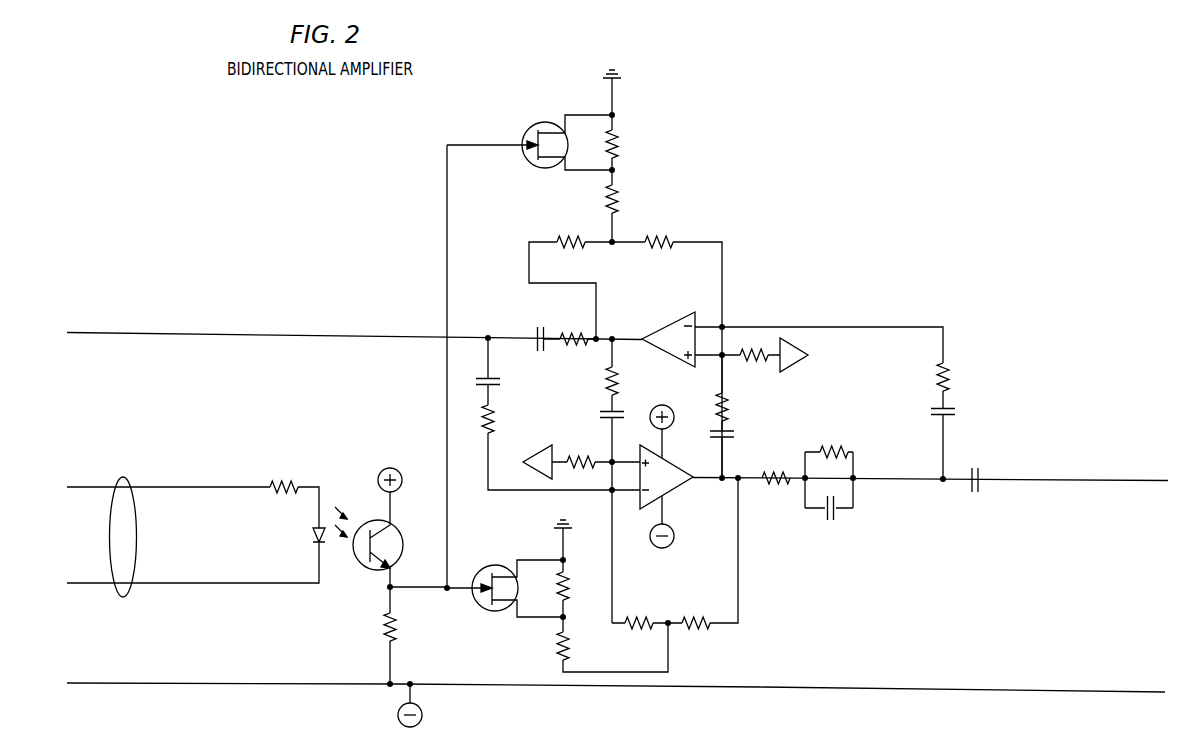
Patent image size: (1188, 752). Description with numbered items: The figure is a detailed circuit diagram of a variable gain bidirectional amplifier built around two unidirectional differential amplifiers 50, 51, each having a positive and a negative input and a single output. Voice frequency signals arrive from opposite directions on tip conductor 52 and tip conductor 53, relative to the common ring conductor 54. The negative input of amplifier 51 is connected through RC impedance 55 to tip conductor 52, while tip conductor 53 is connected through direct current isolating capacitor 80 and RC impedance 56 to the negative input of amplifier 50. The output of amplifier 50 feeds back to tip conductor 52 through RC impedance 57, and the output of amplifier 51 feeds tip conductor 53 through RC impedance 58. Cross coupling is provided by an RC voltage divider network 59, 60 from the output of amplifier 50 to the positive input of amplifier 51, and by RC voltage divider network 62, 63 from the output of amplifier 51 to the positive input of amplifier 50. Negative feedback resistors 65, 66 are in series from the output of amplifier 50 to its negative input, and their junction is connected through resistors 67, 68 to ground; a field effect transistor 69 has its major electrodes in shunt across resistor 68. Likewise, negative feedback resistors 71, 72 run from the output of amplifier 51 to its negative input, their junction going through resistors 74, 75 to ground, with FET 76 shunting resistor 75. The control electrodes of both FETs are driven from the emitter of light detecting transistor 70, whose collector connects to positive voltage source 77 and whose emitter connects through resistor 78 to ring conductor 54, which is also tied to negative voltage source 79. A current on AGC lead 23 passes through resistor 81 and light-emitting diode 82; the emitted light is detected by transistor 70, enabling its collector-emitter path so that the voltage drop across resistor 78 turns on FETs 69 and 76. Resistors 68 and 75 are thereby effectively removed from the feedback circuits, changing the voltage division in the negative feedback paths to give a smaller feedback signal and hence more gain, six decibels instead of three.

The AGC lead 23 is at (127, 593).
The unidirectional differential amplifier 50 is at (667, 324).
The unidirectional differential amplifier 51 is at (680, 487).
The tip conductor 52 is at (157, 333).
The tip conductor 53 is at (1045, 481).
The ring conductor 54 is at (133, 683).
The RC impedance 55 is at (518, 409).
The RC impedance 56 is at (973, 405).
The RC impedance 57 is at (559, 327).
The RC impedance 58 is at (804, 498).
The RC voltage divider network 59 is at (643, 405).
The RC voltage divider network 60 is at (581, 455).
The RC voltage divider network 62 is at (753, 433).
The RC voltage divider network 63 is at (774, 361).
The negative feedback resistor 65 is at (570, 275).
The negative feedback resistor 66 is at (668, 344).
The resistor 67 is at (625, 207).
The resistor 68 is at (624, 120).
The field effect transistor 69 is at (531, 342).
The light detecting transistor 70 is at (391, 548).
The negative feedback resistor 71 is at (703, 553).
The negative feedback resistor 72 is at (641, 608).
The resistor 74 is at (612, 644).
The resistor 75 is at (576, 568).
The field effect transistor 76 is at (505, 581).
The positive voltage source 77 is at (403, 494).
The resistor 78 is at (405, 635).
The negative voltage source 79 is at (423, 705).
The direct current isolating capacitor 80 is at (976, 468).
The resistor 81 is at (193, 492).
The light-emitting diode 82 is at (196, 552).